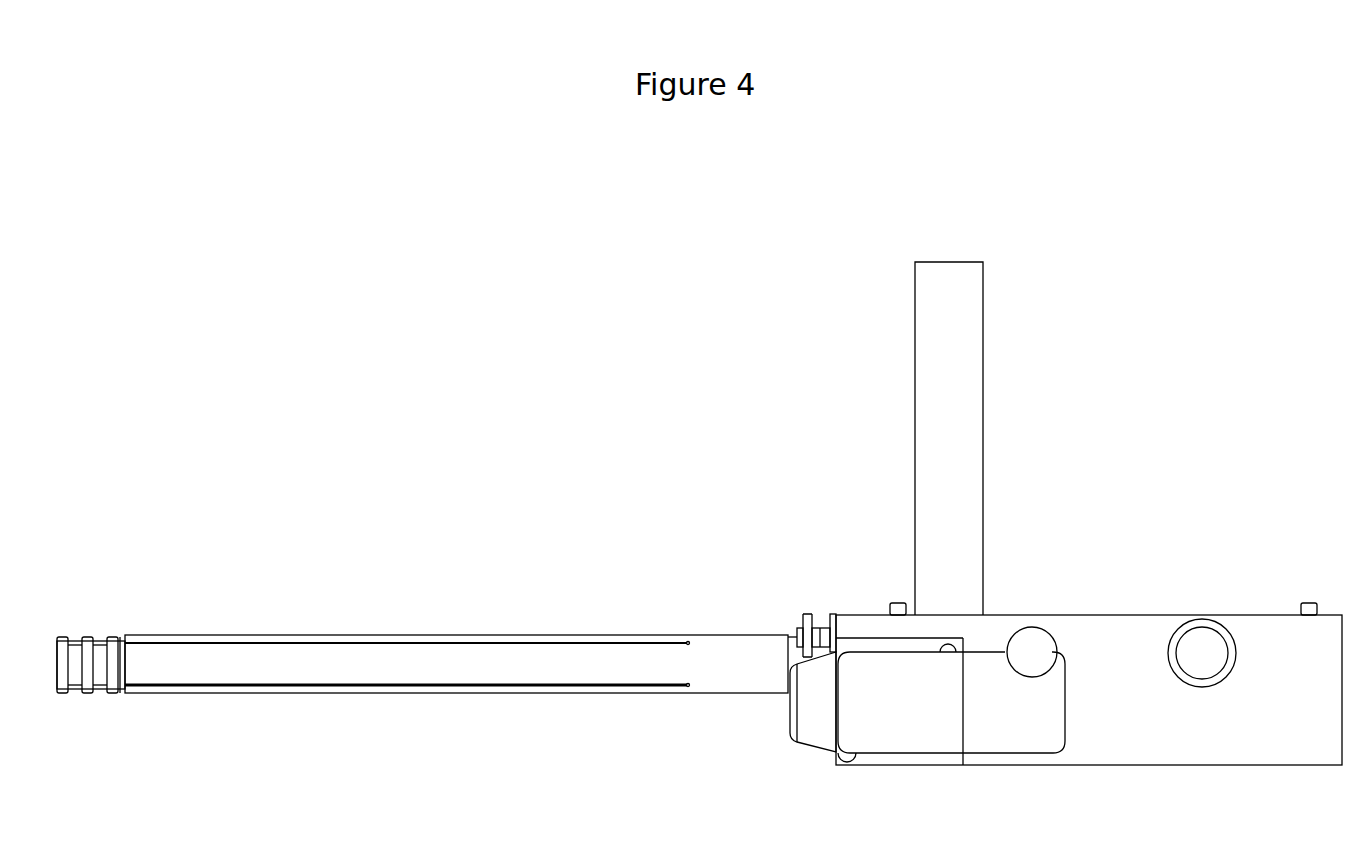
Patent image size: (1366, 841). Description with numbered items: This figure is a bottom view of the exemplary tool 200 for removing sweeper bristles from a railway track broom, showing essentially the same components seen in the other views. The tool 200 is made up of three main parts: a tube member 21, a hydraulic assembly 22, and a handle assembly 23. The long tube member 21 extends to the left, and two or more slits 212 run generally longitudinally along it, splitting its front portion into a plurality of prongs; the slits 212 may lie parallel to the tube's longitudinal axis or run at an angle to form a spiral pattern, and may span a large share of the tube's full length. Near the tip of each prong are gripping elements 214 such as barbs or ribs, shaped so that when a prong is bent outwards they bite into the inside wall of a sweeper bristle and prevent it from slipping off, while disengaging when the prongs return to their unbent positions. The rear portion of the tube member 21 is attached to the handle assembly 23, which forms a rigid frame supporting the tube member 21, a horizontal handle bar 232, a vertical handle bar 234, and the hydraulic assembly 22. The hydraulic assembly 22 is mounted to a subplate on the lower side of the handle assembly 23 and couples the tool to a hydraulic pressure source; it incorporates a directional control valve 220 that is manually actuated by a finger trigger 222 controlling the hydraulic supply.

The tool 200 is at (1088, 244).
The tube member 21 is at (358, 746).
The slits 212 is at (295, 671).
The gripping elements 214 is at (88, 709).
The hydraulic assembly 22 is at (757, 756).
The directional control valve 220 is at (951, 702).
The finger trigger 222 is at (1032, 612).
The handle assembly 23 is at (1249, 550).
The horizontal handle bar 232 is at (982, 351).
The vertical handle bar 234 is at (1175, 618).